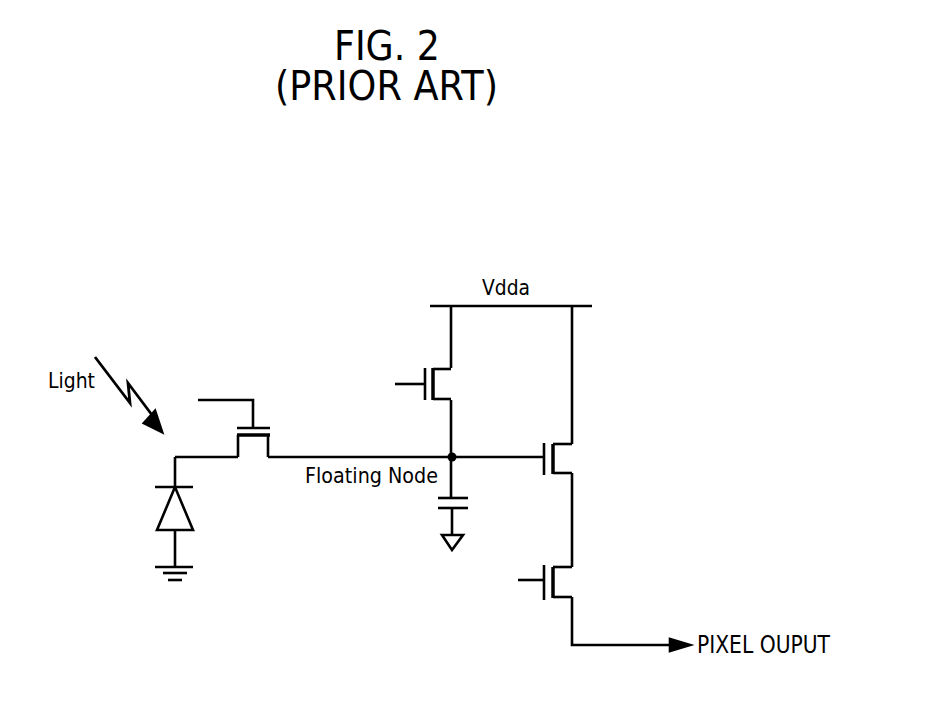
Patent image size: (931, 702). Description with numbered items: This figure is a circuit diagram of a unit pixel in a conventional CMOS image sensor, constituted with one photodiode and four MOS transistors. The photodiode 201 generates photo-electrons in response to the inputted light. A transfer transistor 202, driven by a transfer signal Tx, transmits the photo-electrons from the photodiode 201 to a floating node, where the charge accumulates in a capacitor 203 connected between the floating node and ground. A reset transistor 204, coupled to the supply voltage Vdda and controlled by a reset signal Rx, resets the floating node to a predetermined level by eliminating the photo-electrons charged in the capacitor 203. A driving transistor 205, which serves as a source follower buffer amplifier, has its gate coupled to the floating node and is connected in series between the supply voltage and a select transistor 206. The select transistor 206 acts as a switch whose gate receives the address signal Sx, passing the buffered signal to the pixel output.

The photodiode 201 is at (157, 532).
The transfer transistor 202 is at (252, 460).
The capacitor 203 is at (438, 510).
The reset transistor 204 is at (455, 386).
The driving transistor 205 is at (575, 460).
The select transistor 206 is at (575, 584).